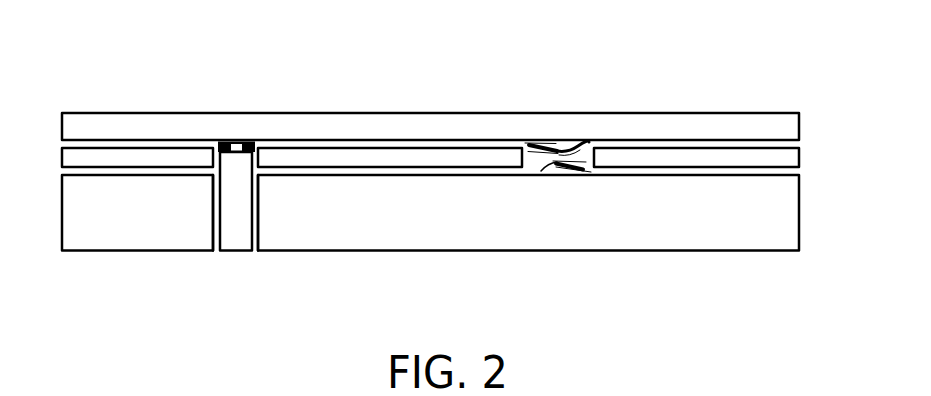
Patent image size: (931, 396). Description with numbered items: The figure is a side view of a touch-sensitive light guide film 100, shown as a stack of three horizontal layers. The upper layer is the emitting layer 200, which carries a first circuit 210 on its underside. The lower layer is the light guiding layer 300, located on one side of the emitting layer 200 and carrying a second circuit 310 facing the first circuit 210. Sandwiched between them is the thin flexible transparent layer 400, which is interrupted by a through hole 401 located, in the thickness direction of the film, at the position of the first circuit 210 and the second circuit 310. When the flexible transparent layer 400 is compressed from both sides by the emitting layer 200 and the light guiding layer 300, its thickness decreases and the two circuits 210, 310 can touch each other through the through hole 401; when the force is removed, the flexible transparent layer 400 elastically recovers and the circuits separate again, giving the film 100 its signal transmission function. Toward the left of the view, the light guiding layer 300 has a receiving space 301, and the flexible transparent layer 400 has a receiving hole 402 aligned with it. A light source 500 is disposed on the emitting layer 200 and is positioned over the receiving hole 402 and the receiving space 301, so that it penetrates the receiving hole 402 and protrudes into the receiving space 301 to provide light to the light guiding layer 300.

The touch-sensitive light guide film 100 is at (107, 44).
The emitting layer 200 is at (669, 136).
The first circuit 210 is at (548, 143).
The light guiding layer 300 is at (748, 243).
The receiving space 301 is at (258, 197).
The second circuit 310 is at (550, 172).
The flexible transparent layer 400 is at (755, 160).
The through hole 401 is at (588, 151).
The receiving hole 402 is at (217, 153).
The light source 500 is at (237, 233).